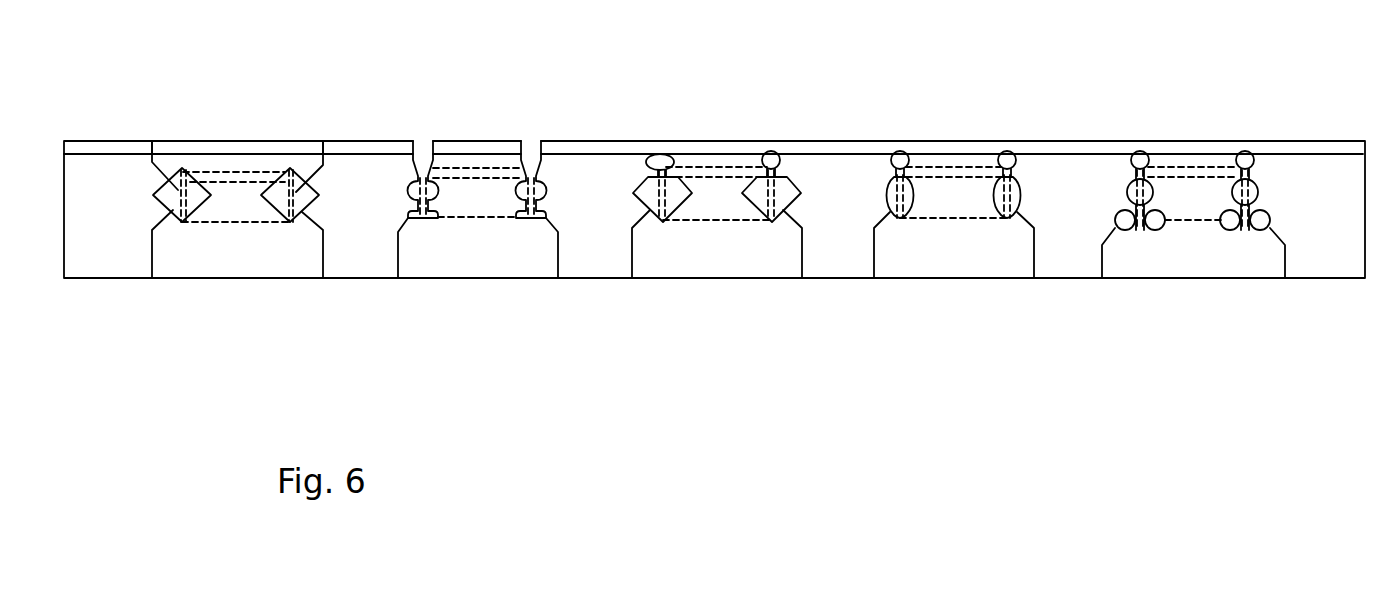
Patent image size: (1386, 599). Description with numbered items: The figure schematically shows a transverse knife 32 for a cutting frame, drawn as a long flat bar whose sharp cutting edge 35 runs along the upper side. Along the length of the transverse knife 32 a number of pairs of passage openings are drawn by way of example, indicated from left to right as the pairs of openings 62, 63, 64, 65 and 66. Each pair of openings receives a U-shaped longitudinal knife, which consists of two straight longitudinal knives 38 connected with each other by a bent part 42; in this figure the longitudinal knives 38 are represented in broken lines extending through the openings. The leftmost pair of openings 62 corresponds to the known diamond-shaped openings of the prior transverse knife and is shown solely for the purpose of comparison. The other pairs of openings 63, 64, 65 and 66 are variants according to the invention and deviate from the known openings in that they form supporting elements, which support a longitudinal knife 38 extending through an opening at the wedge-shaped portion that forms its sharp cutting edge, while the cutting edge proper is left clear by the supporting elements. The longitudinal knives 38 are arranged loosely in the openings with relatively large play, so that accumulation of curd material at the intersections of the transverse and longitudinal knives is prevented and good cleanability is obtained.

The transverse knife 32 is at (1346, 262).
The cutting edge 35 is at (1345, 140).
The longitudinal knife 38 is at (152, 141).
The bent part 42 is at (238, 212).
The pair of passage openings 62 is at (152, 278).
The pair of passage openings 63 is at (398, 278).
The pair of passage openings 64 is at (632, 278).
The pair of passage openings 65 is at (874, 278).
The pair of passage openings 66 is at (1102, 278).